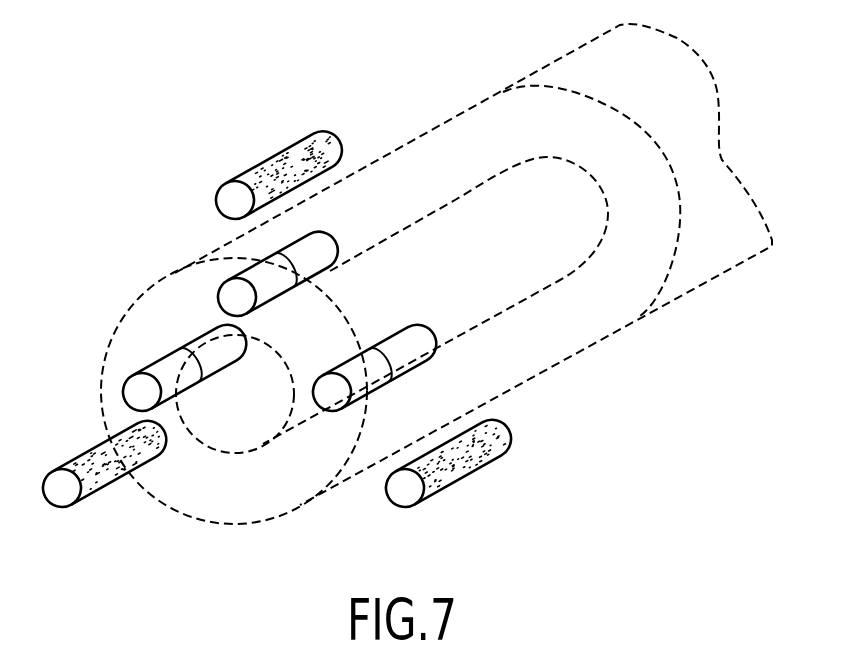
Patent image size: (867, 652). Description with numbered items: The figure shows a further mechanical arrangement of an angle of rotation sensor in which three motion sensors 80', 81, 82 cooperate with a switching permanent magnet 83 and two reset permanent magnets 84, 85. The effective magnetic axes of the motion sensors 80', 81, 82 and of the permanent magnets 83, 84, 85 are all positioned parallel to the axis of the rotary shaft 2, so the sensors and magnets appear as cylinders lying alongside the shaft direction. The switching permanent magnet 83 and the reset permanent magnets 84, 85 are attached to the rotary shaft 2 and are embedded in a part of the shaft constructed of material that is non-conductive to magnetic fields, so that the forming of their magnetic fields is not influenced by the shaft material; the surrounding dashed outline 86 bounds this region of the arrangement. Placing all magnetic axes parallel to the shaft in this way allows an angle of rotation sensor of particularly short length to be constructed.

The rotary shaft 2 is at (255, 422).
The motion sensor 80' is at (267, 170).
The motion sensor 81 is at (102, 487).
The motion sensor 82 is at (472, 472).
The switching permanent magnet 83 is at (234, 281).
The reset permanent magnet 84 is at (173, 358).
The reset permanent magnet 85 is at (411, 353).
The sleeve 86 is at (243, 507).